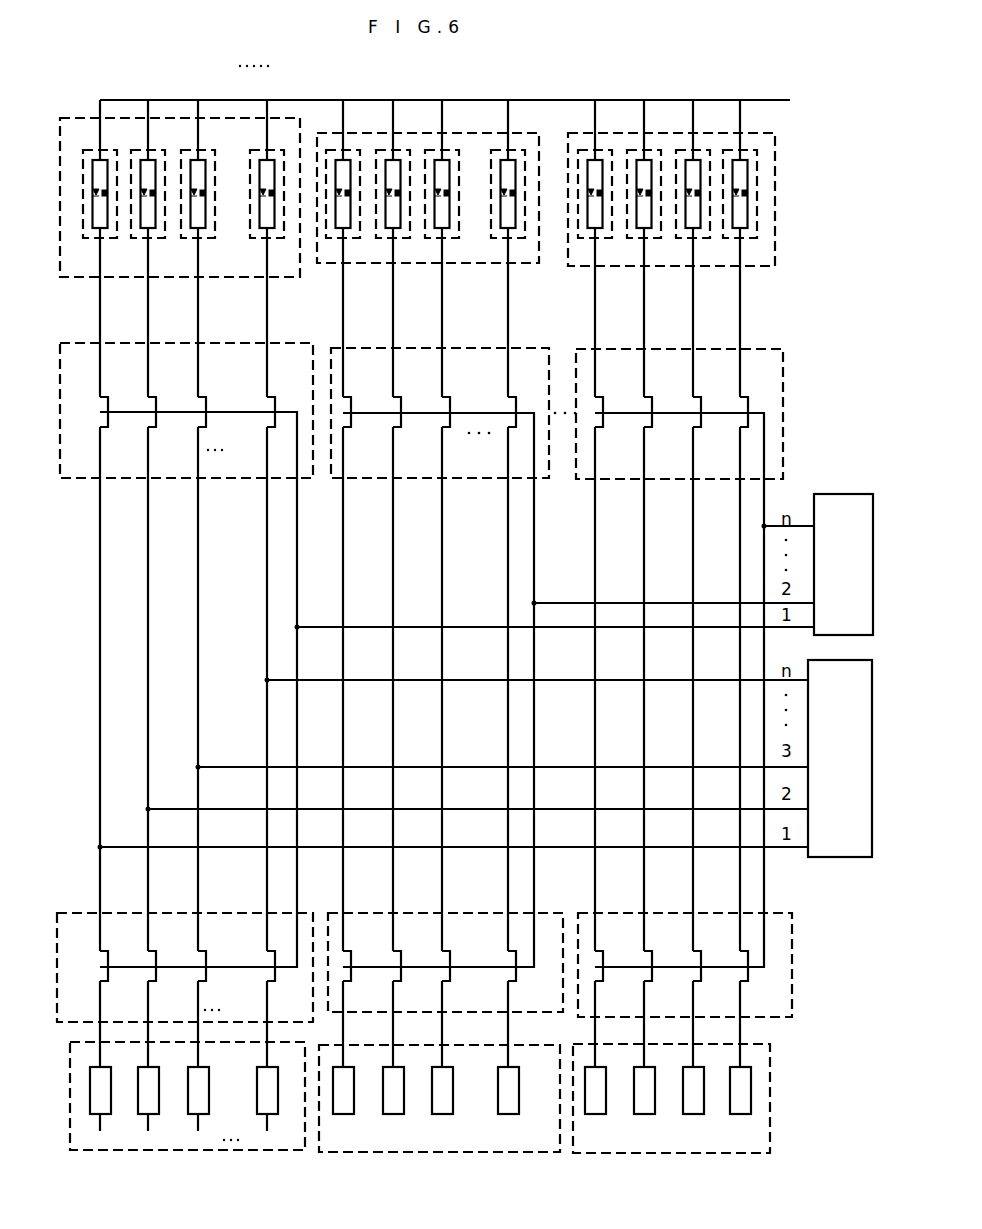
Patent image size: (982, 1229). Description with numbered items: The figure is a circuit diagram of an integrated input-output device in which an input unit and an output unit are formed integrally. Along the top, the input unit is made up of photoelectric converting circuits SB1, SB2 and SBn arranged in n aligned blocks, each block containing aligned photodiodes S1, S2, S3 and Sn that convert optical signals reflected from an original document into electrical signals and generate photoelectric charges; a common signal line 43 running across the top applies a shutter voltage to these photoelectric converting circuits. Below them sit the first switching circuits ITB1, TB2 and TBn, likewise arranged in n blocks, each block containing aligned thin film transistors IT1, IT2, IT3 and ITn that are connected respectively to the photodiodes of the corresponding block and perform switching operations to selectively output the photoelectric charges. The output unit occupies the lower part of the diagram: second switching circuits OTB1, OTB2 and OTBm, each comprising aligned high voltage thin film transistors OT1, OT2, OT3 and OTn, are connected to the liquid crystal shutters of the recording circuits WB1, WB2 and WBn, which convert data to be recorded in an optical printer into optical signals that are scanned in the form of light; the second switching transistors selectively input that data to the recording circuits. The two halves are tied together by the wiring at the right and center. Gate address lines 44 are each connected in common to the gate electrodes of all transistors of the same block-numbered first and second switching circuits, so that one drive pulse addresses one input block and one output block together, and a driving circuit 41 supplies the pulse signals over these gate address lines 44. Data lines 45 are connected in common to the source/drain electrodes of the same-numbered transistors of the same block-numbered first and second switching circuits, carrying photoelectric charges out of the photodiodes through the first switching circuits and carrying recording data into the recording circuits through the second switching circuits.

The photoelectric converting circuit SB1 is at (64, 132).
The photoelectric converting circuit SB2 is at (530, 140).
The photoelectric converting circuit SBn is at (760, 142).
The photodiode S1 is at (110, 150).
The photodiode S2 is at (159, 150).
The photodiode S3 is at (206, 150).
The photodiode Sn is at (278, 150).
The signal line 43 is at (624, 100).
The first switching circuit ITB1 is at (83, 476).
The first switching circuit TB2 is at (487, 474).
The first switching circuit TBn is at (777, 358).
The thin film transistor IT1 is at (106, 413).
The thin film transistor IT2 is at (154, 413).
The thin film transistor IT3 is at (204, 413).
The thin film transistor ITn is at (273, 413).
The driving circuit 41 is at (836, 498).
The gate address line 44 is at (560, 602).
The data line 45 is at (565, 680).
The second switching circuit OTB1 is at (75, 918).
The second switching circuit OTB2 is at (458, 920).
The second switching circuit OTBm is at (776, 935).
The thin film transistor OT1 is at (106, 968).
The thin film transistor OT2 is at (154, 968).
The thin film transistor OT3 is at (204, 968).
The thin film transistor OTn is at (273, 968).
The recording circuit WB1 is at (296, 1150).
The recording circuit WB2 is at (537, 1147).
The recording circuit WBn is at (750, 1148).